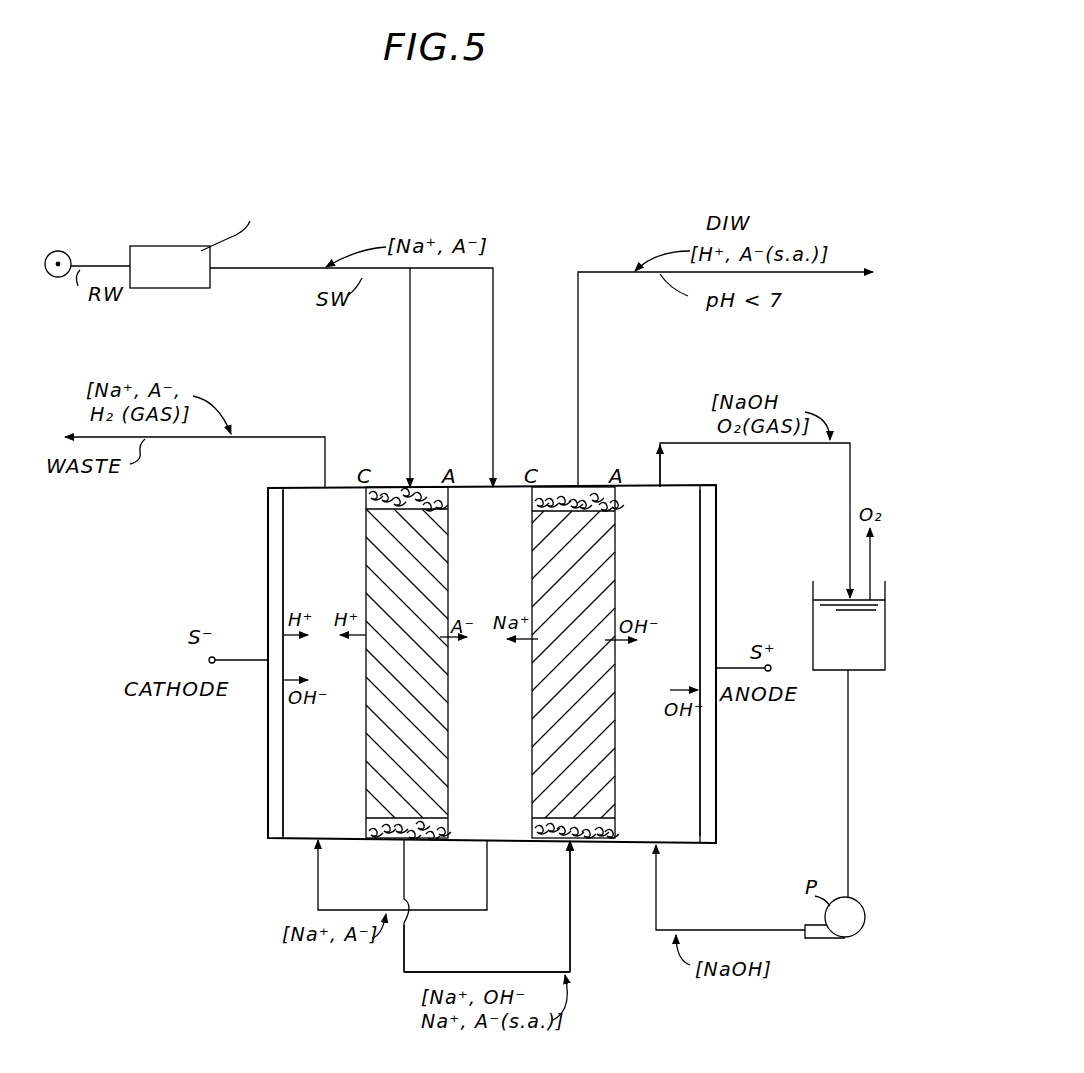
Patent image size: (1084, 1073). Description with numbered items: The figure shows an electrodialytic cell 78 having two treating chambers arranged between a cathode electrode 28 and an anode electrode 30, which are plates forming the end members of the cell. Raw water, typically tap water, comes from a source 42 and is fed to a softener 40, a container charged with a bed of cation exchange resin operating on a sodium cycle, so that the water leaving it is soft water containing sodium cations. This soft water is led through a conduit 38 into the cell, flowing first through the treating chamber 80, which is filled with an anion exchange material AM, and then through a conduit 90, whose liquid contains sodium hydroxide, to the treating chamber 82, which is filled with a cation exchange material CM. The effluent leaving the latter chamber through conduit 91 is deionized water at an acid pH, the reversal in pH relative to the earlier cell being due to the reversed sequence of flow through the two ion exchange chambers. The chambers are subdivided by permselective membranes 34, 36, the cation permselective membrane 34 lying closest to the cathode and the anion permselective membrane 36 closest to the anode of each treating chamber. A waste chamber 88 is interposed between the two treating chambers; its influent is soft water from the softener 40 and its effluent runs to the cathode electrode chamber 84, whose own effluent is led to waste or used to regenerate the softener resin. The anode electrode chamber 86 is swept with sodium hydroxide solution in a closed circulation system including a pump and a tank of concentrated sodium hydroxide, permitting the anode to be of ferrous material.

The source 42 is at (60, 251).
The softener 40 is at (187, 290).
The conduit 38 is at (393, 275).
The conduit 91 is at (578, 272).
The cathode electrode 28 is at (266, 838).
The anode electrode 30 is at (714, 845).
The cathode electrode chamber 84 is at (283, 567).
The anode electrode chamber 86 is at (698, 555).
The permselective membrane 34 is at (366, 534).
The permselective membrane 36 is at (461, 560).
The electrodialytic cell 78 is at (813, 614).
The treating chamber 80 is at (391, 839).
The waste chamber 88 is at (471, 840).
The treating chamber 82 is at (548, 840).
The conduit 90 is at (404, 968).